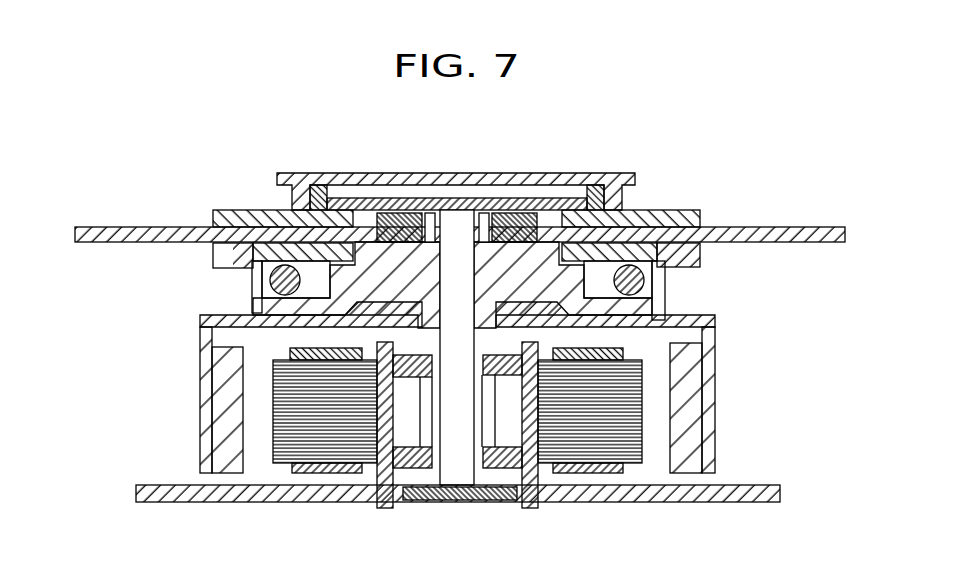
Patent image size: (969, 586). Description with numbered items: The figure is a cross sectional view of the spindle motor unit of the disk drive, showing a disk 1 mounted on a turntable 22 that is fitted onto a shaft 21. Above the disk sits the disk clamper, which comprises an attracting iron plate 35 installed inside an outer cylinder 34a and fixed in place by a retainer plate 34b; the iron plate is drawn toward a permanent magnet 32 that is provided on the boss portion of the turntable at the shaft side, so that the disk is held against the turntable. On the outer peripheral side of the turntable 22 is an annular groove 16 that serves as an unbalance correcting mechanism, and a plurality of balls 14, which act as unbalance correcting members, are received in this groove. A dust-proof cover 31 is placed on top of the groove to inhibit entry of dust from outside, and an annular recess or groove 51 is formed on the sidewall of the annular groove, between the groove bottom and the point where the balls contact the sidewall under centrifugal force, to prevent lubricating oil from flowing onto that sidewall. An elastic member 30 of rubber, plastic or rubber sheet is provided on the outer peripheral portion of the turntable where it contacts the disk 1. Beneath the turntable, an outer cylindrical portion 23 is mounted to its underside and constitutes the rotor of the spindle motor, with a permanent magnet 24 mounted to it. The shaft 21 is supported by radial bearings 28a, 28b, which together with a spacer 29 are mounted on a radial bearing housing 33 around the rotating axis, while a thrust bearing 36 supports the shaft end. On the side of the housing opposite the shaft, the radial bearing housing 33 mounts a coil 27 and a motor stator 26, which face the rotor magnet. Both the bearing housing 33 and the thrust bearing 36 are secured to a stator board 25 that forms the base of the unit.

The disk 1 is at (788, 227).
The balls 14 is at (640, 286).
The annular groove 16 is at (603, 273).
The shaft 21 is at (455, 232).
The turntable 22 is at (530, 260).
The outer cylindrical portion 23 is at (712, 390).
The permanent magnet 24 is at (690, 435).
The stator board 25 is at (673, 497).
The motor stator 26 is at (305, 352).
The coil 27 is at (287, 433).
The radial bearing 28a is at (530, 342).
The radial bearing 28b is at (497, 467).
The spacer 29 is at (395, 470).
The elastic member 30 is at (232, 248).
The dust-proof cover 31 is at (266, 257).
The permanent magnet 32 is at (400, 222).
The radial bearing housing 33 is at (380, 475).
The outer cylinder 34a is at (678, 210).
The retainer plate 34b is at (528, 185).
The attracting iron plate 35 is at (358, 207).
The thrust bearing 36 is at (458, 500).
The annular recess or groove 51 is at (262, 297).